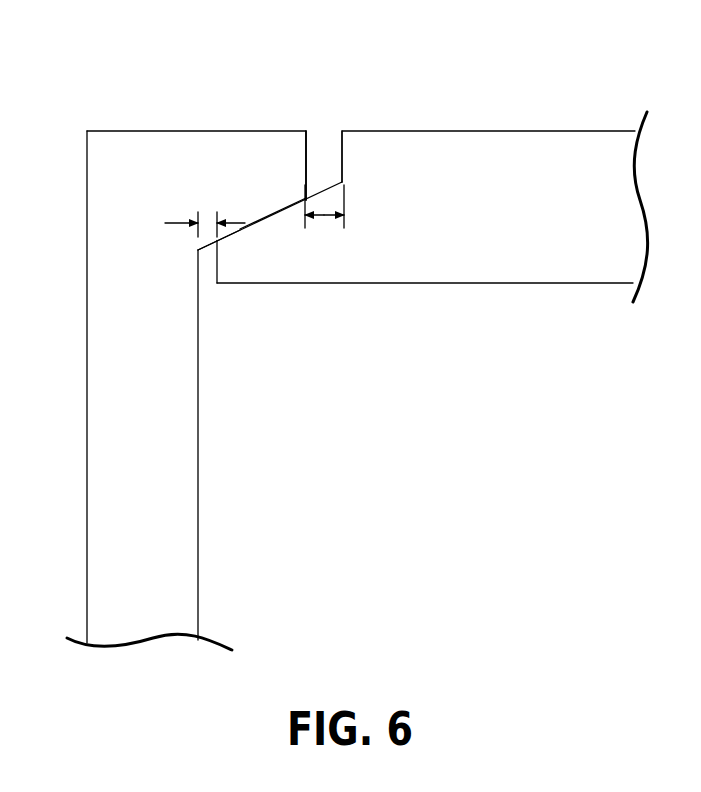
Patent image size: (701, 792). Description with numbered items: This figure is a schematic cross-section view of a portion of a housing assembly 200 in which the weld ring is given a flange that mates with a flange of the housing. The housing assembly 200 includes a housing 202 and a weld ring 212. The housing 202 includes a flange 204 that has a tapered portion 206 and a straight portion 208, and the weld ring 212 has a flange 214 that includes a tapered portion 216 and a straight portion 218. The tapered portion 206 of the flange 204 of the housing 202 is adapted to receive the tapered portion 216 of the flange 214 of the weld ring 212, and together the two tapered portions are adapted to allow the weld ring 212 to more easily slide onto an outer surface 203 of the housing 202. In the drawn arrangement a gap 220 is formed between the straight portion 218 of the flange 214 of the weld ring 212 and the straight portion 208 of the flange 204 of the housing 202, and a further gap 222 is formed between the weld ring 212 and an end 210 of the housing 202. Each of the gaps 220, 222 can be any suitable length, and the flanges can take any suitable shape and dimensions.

The housing assembly 200 is at (507, 88).
The housing 202 is at (551, 283).
The outer surface 203 is at (590, 131).
The flange 204 is at (322, 185).
The tapered portion 206 is at (272, 214).
The straight portion 208 is at (342, 143).
The end 210 is at (216, 275).
The weld ring 212 is at (85, 513).
The flange 214 is at (268, 208).
The tapered portion 216 is at (257, 217).
The straight portion 218 is at (308, 136).
The gap 220 is at (322, 220).
The gap 222 is at (178, 223).